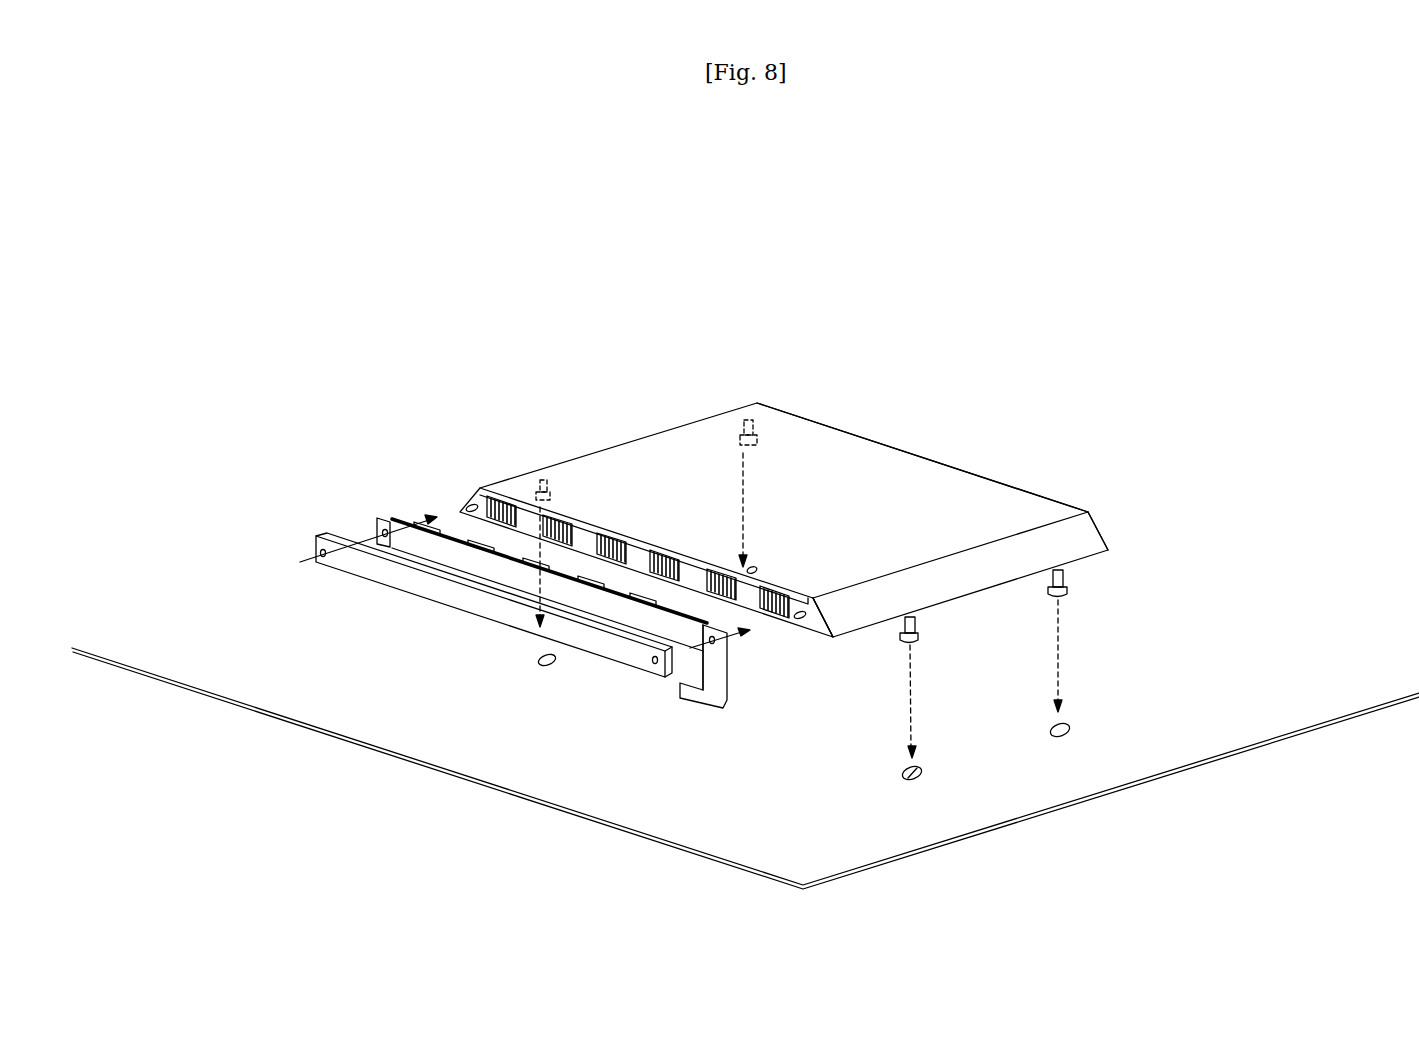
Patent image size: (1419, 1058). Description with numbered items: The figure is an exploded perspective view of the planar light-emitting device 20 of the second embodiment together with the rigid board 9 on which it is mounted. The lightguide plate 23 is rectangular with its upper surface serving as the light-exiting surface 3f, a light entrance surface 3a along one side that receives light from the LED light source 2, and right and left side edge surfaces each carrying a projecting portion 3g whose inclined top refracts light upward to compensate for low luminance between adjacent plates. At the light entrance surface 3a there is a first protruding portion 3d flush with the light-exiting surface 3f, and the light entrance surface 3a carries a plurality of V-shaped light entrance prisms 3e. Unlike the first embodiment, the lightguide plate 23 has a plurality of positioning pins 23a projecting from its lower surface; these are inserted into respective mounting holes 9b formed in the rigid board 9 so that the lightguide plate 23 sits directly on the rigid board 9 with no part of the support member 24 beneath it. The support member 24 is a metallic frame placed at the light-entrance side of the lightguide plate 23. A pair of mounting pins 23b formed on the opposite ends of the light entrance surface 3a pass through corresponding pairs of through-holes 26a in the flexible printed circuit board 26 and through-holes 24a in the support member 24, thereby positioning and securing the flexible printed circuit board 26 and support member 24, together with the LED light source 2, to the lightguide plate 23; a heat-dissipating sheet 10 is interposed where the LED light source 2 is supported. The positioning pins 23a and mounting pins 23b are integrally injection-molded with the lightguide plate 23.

The LED light source 2 is at (427, 517).
The light entrance surface 3a is at (818, 620).
The first protruding portion 3d is at (497, 490).
The light entrance prisms 3e is at (552, 512).
The light-exiting surface 3f is at (855, 462).
The projecting portion 3g is at (1060, 538).
The rigid board 9 is at (1205, 740).
The mounting holes 9b is at (545, 660).
The heat-dissipating sheet 10 is at (453, 553).
The planar light-emitting device 20 is at (748, 570).
The lightguide plate 23 is at (980, 472).
The positioning pins 23a is at (548, 480).
The mounting pins 23b is at (465, 503).
The support member 24 is at (445, 600).
The through-holes 24a is at (323, 560).
The flexible printed circuit board 26 is at (722, 692).
The through-holes 26a is at (378, 530).